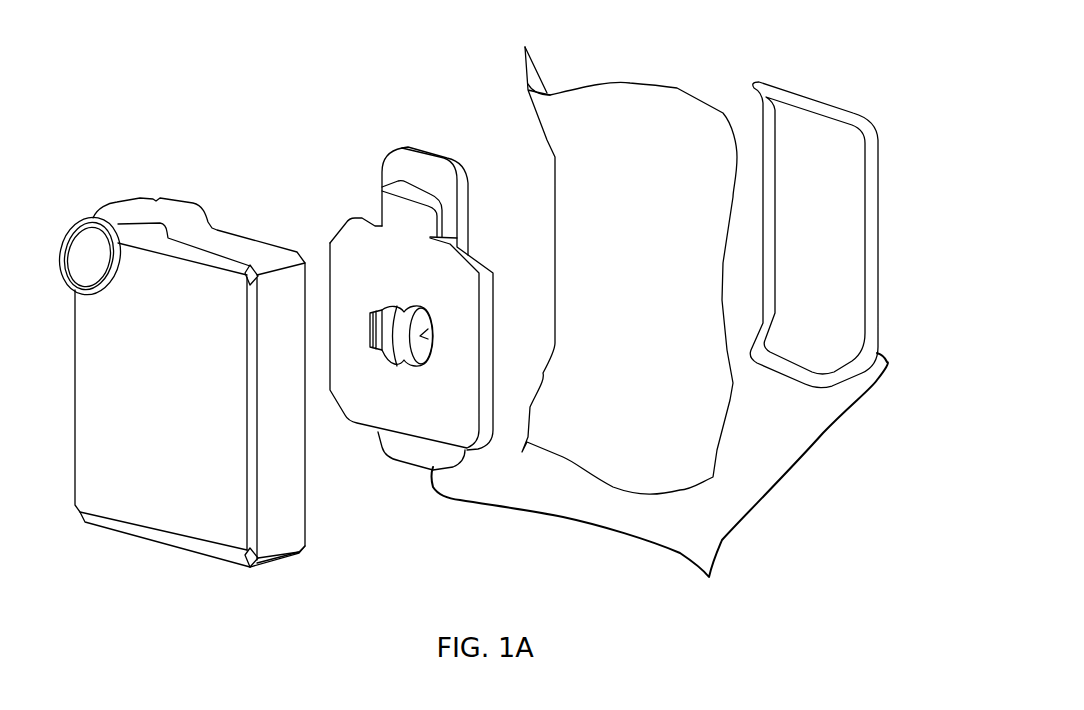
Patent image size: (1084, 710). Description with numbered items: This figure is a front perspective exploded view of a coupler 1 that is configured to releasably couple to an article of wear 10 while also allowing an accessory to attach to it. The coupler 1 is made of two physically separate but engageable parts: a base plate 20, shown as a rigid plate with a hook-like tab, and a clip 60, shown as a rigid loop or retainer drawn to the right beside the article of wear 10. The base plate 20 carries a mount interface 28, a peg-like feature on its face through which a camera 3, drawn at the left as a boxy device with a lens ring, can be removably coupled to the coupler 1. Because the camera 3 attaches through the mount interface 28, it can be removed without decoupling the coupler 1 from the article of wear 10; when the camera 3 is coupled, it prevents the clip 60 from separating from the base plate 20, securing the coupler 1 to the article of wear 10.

The coupler 1 is at (660, 479).
The camera 3 is at (280, 558).
The article of wear 10 is at (677, 88).
The base plate 20 is at (438, 291).
The mount interface 28 is at (421, 337).
The clip 60 is at (862, 115).